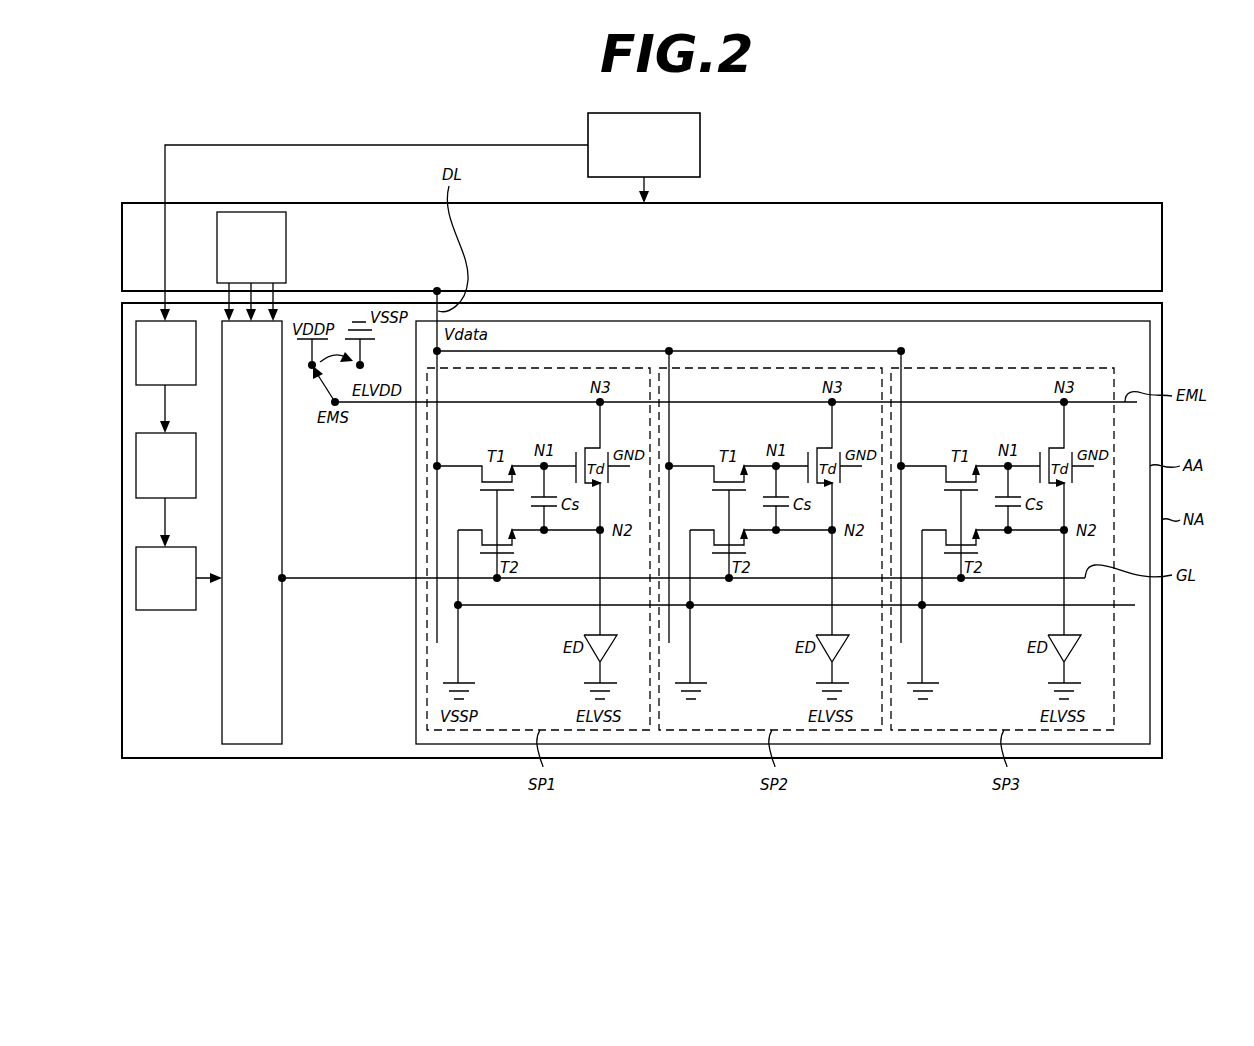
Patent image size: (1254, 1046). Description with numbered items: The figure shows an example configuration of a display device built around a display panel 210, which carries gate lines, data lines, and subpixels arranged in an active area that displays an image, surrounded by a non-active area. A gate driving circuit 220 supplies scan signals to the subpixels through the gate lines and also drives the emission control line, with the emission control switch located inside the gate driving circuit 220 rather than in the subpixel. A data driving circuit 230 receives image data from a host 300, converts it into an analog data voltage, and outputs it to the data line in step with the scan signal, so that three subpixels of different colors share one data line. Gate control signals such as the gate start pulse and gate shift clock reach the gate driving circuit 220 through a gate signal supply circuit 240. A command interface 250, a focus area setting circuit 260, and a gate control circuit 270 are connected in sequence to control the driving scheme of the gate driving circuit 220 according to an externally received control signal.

The display panel 210 is at (1163, 341).
The gate driving circuit 220 is at (252, 532).
The data driving circuit 230 is at (642, 247).
The gate signal supply circuit 240 is at (251, 247).
The command interface 250 is at (166, 353).
The focus area setting circuit 260 is at (166, 465).
The gate control circuit 270 is at (166, 578).
The host 300 is at (644, 145).